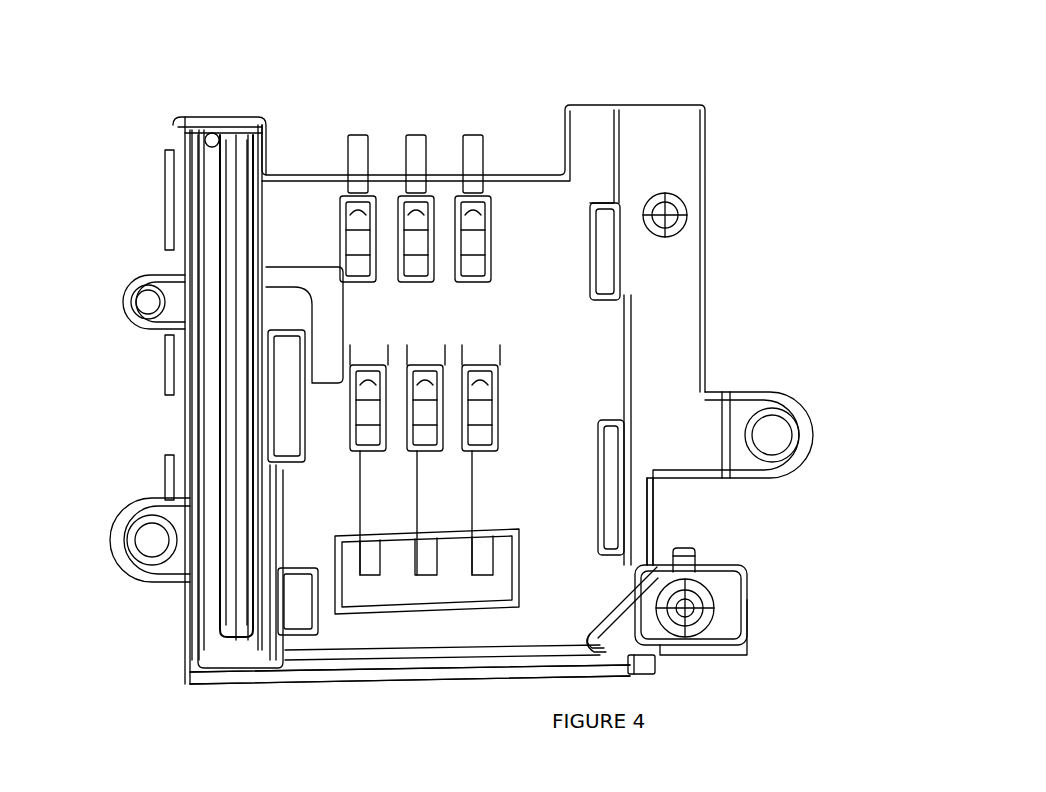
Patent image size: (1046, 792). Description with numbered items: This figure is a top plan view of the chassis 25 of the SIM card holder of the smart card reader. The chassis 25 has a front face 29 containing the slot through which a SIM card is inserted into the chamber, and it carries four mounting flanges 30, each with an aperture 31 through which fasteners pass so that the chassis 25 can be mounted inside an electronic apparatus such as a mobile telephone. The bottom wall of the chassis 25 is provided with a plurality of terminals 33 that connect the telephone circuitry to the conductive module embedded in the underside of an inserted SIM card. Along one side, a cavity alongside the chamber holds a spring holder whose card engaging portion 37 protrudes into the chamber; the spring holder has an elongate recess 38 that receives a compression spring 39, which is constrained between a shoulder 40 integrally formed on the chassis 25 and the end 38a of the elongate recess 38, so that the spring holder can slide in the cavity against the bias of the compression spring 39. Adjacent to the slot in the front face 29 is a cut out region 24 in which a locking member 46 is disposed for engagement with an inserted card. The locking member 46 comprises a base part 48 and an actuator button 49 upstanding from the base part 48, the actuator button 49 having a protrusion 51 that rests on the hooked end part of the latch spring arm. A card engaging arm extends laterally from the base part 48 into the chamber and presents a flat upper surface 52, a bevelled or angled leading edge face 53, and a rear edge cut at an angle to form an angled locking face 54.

The cut out region 24 is at (640, 670).
The chassis 25 is at (180, 686).
The front face 29 is at (385, 680).
The mounting flanges 30 is at (118, 318).
The apertures 31 is at (148, 304).
The terminals 33 is at (415, 265).
The card engaging portion 37 is at (338, 318).
The elongate recess 38 is at (212, 398).
The end of the elongate recess 38a is at (235, 642).
The compression spring 39 is at (222, 225).
The shoulder 40 is at (212, 133).
The locking member 46 is at (780, 596).
The base part 48 is at (735, 588).
The actuator button 49 is at (712, 618).
The protrusion 51 is at (692, 565).
The flat upper surface 52 is at (622, 613).
The bevelled leading edge face 53 is at (612, 640).
The angled locking face 54 is at (622, 600).